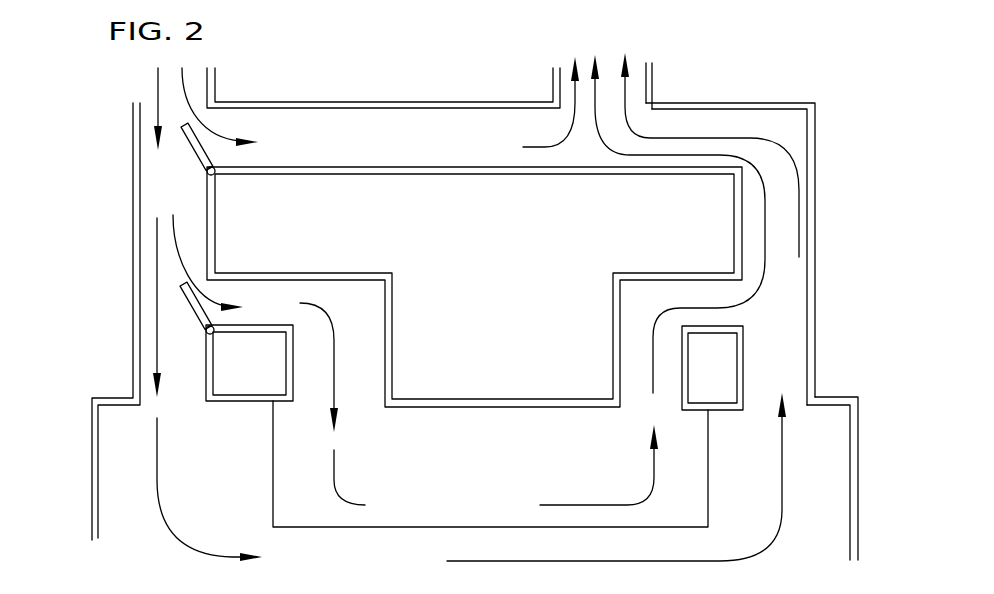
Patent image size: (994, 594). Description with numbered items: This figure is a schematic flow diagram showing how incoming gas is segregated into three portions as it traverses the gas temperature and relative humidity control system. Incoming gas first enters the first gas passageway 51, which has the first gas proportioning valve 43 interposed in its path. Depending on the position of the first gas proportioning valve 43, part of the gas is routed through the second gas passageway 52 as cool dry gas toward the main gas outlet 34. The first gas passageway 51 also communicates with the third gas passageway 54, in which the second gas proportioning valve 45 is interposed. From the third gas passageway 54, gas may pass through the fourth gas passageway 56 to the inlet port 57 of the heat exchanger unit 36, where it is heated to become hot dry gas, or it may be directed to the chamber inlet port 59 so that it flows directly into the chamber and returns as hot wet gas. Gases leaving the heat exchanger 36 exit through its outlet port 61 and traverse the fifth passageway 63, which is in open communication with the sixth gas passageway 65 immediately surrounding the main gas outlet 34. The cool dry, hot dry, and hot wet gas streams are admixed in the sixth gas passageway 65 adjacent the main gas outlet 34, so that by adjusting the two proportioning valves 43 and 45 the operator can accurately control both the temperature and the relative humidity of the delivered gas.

The main gas outlet 34 is at (641, 68).
The heat exchanger unit 36 is at (690, 480).
The first gas proportioning valve 43 is at (190, 143).
The second gas proportioning valve 45 is at (197, 310).
The first gas passageway 51 is at (145, 88).
The second gas passageway 52 is at (322, 116).
The third gas passageway 54 is at (145, 237).
The fourth gas passageway 56 is at (287, 292).
The inlet port 57 is at (368, 383).
The chamber inlet port 59 is at (150, 405).
The outlet port 61 is at (633, 357).
The fifth passageway 63 is at (707, 288).
The sixth gas passageway 65 is at (607, 131).